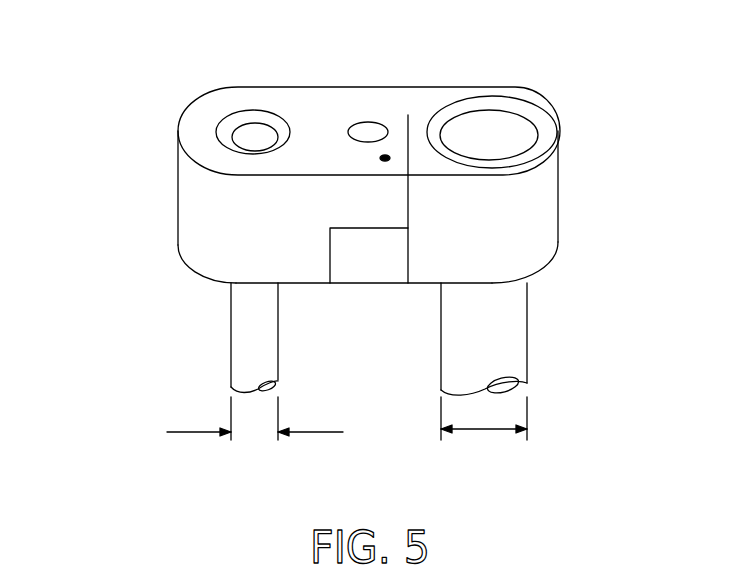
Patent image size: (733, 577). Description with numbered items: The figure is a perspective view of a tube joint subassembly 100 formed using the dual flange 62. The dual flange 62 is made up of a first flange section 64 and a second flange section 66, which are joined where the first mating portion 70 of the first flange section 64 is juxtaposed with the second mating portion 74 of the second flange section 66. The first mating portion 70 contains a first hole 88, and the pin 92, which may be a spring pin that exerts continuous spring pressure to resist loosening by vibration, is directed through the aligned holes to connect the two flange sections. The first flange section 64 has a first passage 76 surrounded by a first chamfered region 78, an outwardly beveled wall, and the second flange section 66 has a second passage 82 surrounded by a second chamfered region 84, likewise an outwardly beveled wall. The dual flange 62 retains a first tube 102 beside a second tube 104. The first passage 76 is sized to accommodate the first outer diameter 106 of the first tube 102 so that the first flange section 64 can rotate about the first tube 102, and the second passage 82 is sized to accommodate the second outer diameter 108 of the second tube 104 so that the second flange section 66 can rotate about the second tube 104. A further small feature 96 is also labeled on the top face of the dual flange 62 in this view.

The dual flange 62 is at (130, 138).
The first flange section 64 is at (190, 217).
The second flange section 66 is at (550, 220).
The first mating portion 70 is at (358, 215).
The second mating portion 74 is at (410, 270).
The first passage 76 is at (252, 132).
The first chamfered region 78 is at (225, 128).
The second passage 82 is at (485, 122).
The second chamfered region 84 is at (530, 117).
The first hole 88 is at (394, 146).
The pin 92 is at (380, 158).
The small aperture 96 is at (365, 128).
The tube joint subassembly 100 is at (657, 160).
The first tube 102 is at (238, 337).
The second tube 104 is at (517, 325).
The first outer diameter 106 is at (193, 432).
The second outer diameter 108 is at (487, 430).